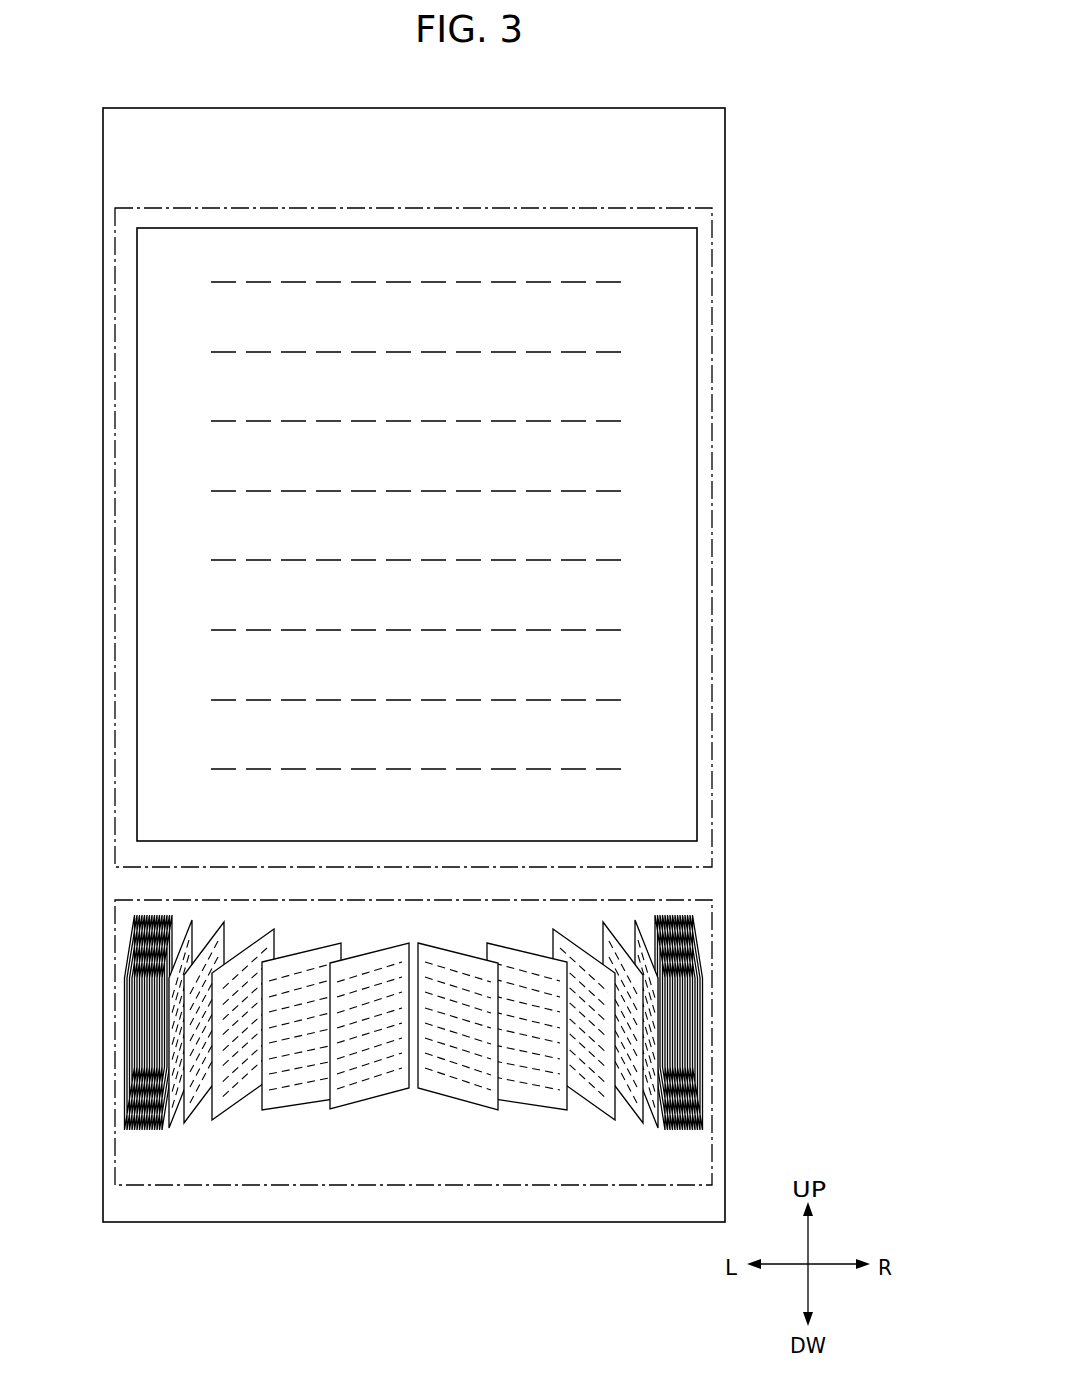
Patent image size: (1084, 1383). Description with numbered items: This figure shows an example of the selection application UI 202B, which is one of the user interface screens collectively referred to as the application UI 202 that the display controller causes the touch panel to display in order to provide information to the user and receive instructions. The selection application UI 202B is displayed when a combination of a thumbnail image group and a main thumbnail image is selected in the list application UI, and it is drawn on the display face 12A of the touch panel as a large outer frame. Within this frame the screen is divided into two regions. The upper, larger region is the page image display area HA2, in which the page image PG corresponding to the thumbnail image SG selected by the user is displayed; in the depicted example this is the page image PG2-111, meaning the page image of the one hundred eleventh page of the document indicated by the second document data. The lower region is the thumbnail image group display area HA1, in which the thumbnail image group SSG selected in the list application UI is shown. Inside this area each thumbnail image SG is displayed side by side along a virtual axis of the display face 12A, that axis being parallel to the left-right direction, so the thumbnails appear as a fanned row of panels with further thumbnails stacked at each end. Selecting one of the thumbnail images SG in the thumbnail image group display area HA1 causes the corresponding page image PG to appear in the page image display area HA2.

The selection application UI 202B is at (342, 108).
The application UI 202 is at (414, 645).
The display face 12A is at (603, 126).
The page image PG2-111 is at (697, 258).
The page image PG is at (517, 534).
The page image display area HA2 is at (712, 396).
The thumbnail image group display area HA1 is at (712, 939).
The thumbnail image group SSG is at (714, 1025).
The thumbnail image SG is at (651, 1116).